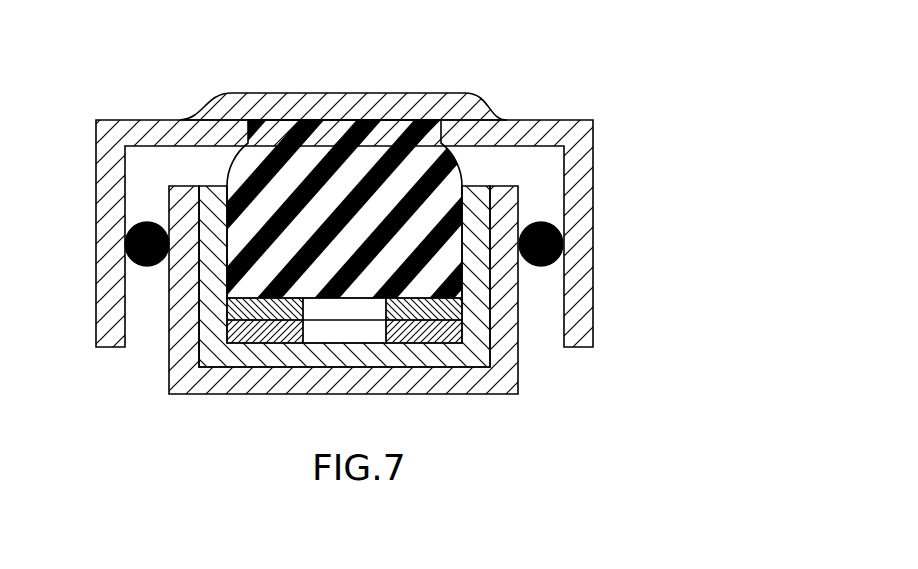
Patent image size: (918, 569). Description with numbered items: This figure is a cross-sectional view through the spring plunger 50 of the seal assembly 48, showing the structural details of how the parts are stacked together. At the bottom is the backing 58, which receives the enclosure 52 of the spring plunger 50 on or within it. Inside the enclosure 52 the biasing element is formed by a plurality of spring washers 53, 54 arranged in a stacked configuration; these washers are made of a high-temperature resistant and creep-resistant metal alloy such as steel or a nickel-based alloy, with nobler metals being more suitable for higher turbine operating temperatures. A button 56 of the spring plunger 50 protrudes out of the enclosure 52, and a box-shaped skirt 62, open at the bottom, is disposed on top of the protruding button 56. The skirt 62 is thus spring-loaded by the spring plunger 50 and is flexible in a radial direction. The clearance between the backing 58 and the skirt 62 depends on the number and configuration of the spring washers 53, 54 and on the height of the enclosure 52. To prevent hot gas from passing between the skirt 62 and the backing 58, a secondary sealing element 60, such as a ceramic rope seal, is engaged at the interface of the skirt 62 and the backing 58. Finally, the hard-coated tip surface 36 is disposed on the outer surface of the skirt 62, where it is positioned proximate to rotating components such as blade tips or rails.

The hard-coated tip surface 36 is at (343, 93).
The seal assembly 48 is at (621, 50).
The spring plunger 50 is at (215, 178).
The enclosure 52 is at (287, 355).
The spring washer 53 is at (227, 313).
The spring washer 54 is at (222, 335).
The button 56 is at (457, 170).
The backing 58 is at (477, 394).
The secondary sealing element 60 is at (542, 268).
The skirt 62 is at (96, 233).